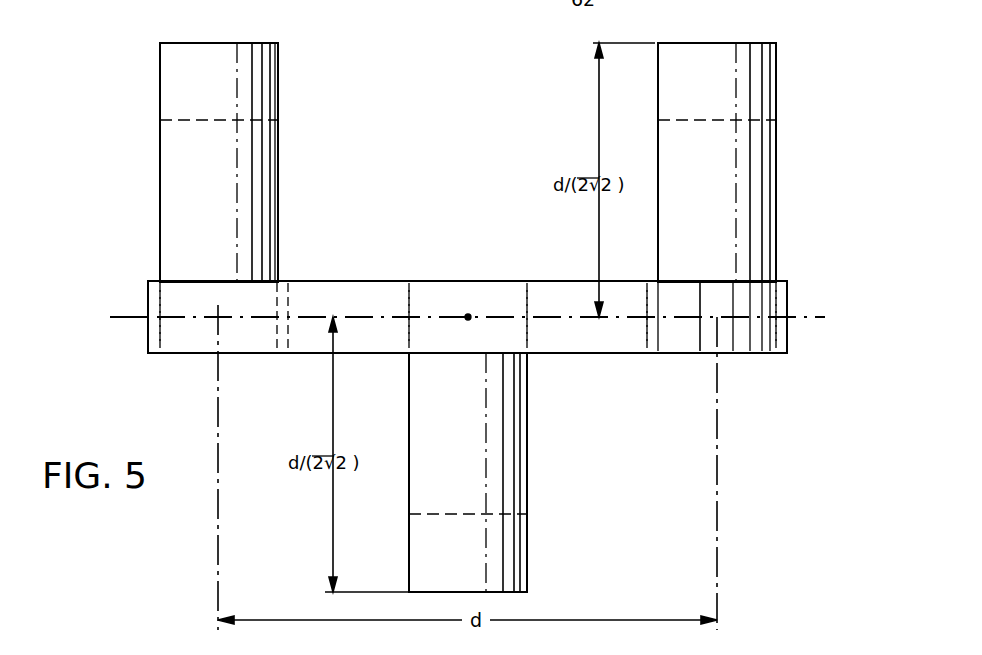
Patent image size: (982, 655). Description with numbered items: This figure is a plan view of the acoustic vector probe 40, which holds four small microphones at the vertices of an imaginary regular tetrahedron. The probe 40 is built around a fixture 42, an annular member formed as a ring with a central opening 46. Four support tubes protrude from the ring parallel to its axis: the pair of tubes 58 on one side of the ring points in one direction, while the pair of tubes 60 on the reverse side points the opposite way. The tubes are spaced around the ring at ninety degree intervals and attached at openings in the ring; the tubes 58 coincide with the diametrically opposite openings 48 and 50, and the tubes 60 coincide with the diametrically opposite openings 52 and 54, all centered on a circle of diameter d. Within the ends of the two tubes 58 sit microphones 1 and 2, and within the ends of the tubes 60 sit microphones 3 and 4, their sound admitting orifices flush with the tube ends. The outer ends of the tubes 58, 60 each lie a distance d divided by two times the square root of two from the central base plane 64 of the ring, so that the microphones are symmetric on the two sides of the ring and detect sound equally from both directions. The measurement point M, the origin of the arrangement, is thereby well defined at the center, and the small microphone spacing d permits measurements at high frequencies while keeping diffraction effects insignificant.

The microphone 1 is at (188, 43).
The microphone 2 is at (714, 43).
The microphone 3 is at (520, 603).
The microphone 4 is at (505, 593).
The acoustic vector probe 40 is at (812, 186).
The fixture 42 is at (790, 291).
The central opening 46 is at (647, 325).
The opening 48 is at (158, 328).
The opening 50 is at (773, 330).
The opening 52 is at (420, 292).
The opening 54 is at (409, 305).
The support tubes 58 is at (160, 196).
The support tubes 60 is at (527, 460).
The central base plane 64 is at (127, 317).
The measurement point M is at (469, 314).